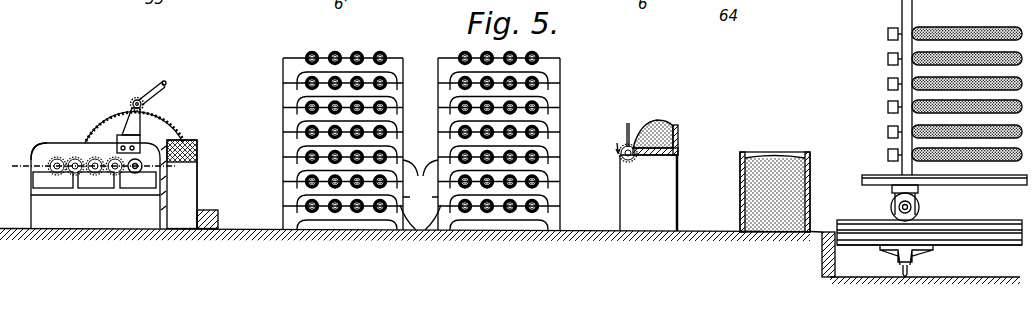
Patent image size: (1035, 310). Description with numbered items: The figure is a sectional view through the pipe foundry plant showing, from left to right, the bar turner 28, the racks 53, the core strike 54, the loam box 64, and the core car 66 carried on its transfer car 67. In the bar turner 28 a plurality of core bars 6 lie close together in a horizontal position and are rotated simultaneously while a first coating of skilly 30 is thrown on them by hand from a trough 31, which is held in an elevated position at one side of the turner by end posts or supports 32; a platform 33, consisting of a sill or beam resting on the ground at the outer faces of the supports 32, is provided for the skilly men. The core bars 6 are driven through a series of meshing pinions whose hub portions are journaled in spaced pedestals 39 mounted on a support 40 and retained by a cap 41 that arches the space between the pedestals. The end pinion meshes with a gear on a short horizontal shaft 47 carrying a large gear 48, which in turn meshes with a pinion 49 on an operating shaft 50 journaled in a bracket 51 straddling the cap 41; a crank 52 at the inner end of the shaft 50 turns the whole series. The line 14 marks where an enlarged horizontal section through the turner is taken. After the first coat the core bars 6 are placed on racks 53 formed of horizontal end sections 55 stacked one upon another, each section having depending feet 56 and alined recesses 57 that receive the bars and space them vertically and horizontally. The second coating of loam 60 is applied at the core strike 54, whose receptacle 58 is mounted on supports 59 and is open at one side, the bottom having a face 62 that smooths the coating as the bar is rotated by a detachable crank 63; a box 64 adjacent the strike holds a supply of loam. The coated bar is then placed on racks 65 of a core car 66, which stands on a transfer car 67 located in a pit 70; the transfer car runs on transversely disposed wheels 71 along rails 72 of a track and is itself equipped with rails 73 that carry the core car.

The core bar 6 is at (73, 174).
The section line 14 is at (16, 160).
The bar turner 28 is at (65, 143).
The skilly 30 is at (192, 139).
The trough 31 is at (197, 151).
The end posts or supports 32 is at (187, 194).
The platform 33 is at (218, 214).
The pedestals 39 is at (42, 178).
The support 40 is at (93, 222).
The cap 41 is at (43, 143).
The short horizontal shaft 47 is at (135, 173).
The large gear 48 is at (110, 118).
The pinion 49 is at (133, 101).
The operating shaft 50 is at (134, 100).
The bracket 51 is at (148, 127).
The crank 52 is at (164, 81).
The racks 53 is at (418, 141).
The core strike 54 is at (608, 138).
The horizontal end sections 55 is at (420, 195).
The depending feet 56 is at (290, 222).
The alined recesses 57 is at (357, 212).
The receptacle 58 is at (678, 136).
The supports 59 is at (648, 193).
The loam 60 is at (665, 124).
The face 62 is at (636, 159).
The crank 63 is at (628, 123).
The box 64 is at (742, 152).
The racks 65 is at (912, 11).
The core car 66 is at (972, 186).
The transfer car 67 is at (998, 246).
The pit 70 is at (836, 255).
The transversely disposed wheels 71 is at (915, 257).
The rails 72 is at (902, 275).
The rails 73 is at (855, 224).